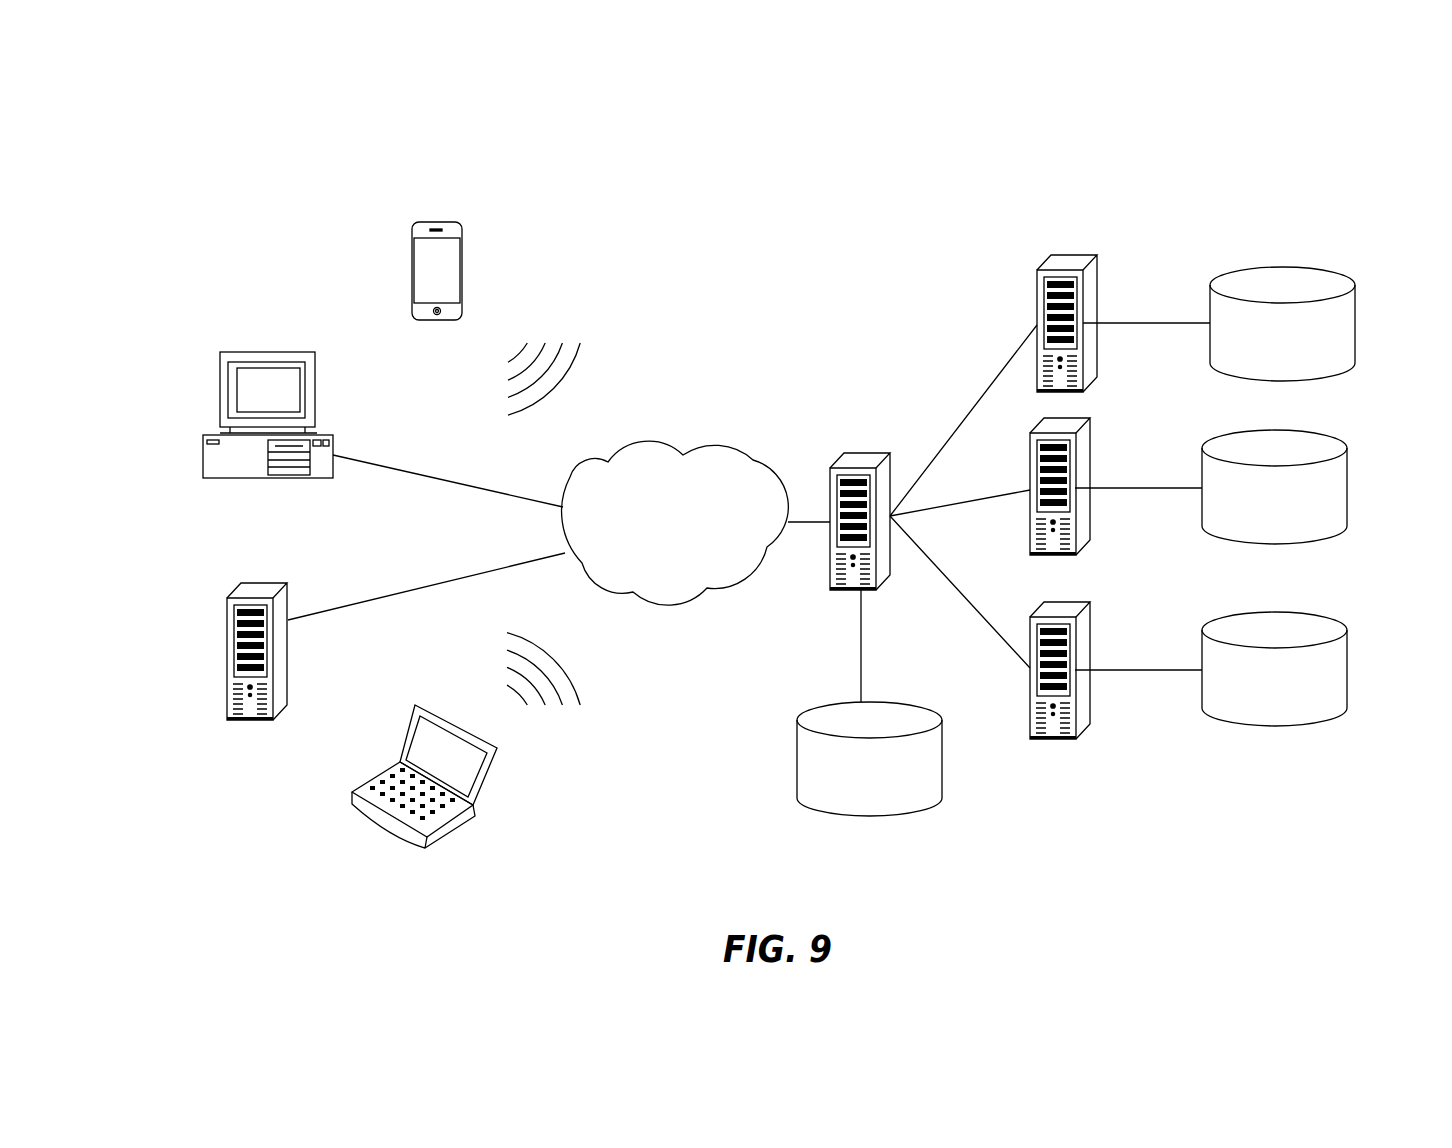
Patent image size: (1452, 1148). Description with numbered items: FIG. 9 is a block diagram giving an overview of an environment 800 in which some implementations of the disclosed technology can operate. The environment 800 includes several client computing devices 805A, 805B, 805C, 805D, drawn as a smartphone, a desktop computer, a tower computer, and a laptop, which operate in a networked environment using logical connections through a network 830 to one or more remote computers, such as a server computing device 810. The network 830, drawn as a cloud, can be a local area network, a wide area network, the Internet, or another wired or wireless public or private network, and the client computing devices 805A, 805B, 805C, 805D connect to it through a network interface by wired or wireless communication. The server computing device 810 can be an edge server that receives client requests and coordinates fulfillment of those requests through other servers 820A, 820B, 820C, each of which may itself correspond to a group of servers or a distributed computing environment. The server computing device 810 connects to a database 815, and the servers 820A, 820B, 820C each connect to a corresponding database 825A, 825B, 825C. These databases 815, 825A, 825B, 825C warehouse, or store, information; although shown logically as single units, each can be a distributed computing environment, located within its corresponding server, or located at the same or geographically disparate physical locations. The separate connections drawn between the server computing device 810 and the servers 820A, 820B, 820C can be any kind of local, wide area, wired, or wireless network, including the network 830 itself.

The environment 800 is at (1147, 141).
The client computing device 805A is at (453, 220).
The client computing device 805B is at (305, 355).
The client computing device 805C is at (277, 583).
The client computing device 805D is at (490, 778).
The network 830 is at (727, 442).
The server computing device 810 is at (872, 453).
The database 815 is at (920, 703).
The server 820A is at (1097, 258).
The server 820B is at (1088, 422).
The server 820C is at (1088, 603).
The database 825A is at (1283, 265).
The database 825B is at (1273, 428).
The database 825C is at (1273, 610).